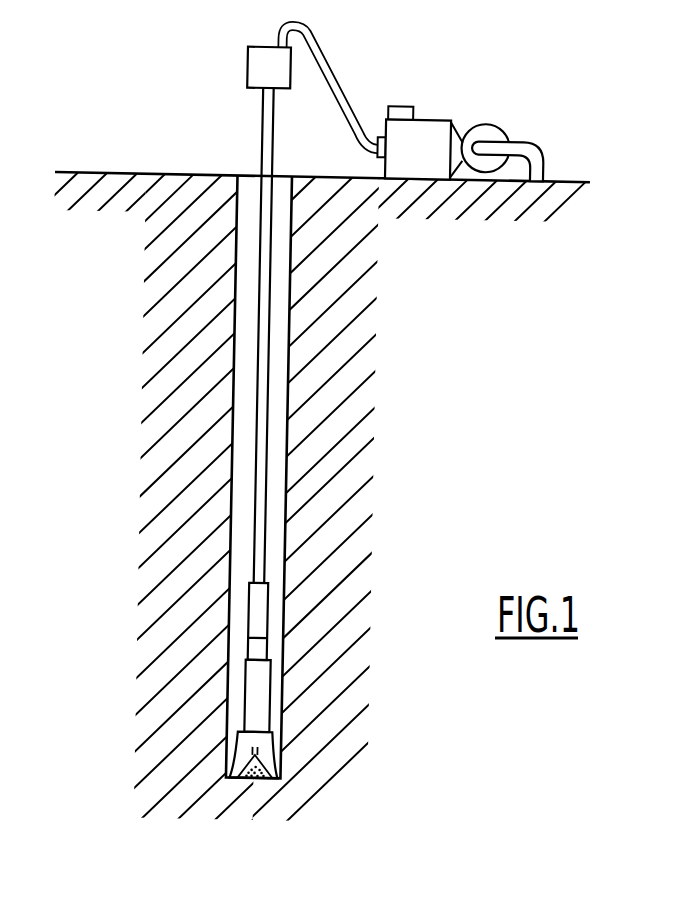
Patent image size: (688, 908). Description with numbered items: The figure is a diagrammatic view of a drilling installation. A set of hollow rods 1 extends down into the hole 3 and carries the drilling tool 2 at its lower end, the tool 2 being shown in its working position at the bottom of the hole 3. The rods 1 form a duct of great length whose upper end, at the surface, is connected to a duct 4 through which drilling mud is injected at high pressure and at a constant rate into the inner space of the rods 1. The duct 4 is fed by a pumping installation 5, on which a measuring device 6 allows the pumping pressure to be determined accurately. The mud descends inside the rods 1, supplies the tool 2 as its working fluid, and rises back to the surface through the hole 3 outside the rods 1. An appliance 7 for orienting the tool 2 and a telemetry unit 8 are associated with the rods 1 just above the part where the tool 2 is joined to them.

The set of rods 1 is at (259, 135).
The drilling tool 2 is at (276, 755).
The hole 3 is at (294, 514).
The duct 4 is at (338, 87).
The pumping installation 5 is at (430, 124).
The measuring device 6 is at (400, 104).
The appliance 7 is at (271, 645).
The telemetry unit 8 is at (270, 697).